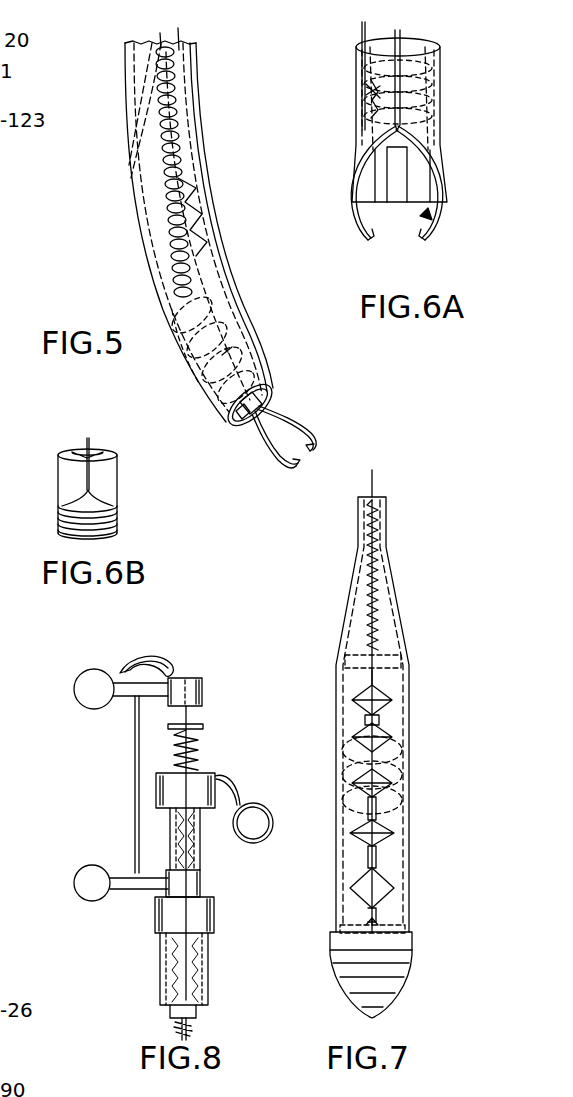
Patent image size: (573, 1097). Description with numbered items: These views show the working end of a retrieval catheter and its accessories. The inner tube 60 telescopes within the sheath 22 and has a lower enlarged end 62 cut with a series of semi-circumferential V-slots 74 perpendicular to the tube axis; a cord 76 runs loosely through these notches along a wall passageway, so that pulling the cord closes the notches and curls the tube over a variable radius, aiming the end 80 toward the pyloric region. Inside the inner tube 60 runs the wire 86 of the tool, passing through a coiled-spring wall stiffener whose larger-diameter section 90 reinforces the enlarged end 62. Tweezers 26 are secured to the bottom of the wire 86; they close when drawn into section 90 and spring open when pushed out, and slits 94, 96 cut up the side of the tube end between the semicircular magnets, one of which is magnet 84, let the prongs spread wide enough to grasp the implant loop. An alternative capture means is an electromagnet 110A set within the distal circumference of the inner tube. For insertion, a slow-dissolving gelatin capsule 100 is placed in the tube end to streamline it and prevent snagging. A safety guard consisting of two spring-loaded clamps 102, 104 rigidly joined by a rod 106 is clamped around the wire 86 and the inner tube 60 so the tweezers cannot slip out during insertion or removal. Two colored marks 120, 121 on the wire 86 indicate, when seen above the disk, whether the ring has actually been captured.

In FIG. 8, the sheath 22 is at (208, 985).
In FIG. 5, the tweezers 26 is at (318, 440).
In FIG. 6A, the tweezers 26 is at (439, 215).
In FIG. 7, the tweezers 26 is at (398, 742).
In FIG. 8, the inner tube 60 is at (200, 848).
In FIG. 5, the lower enlarged end of the inner tube 62 is at (228, 352).
In FIG. 5, the V-slots 74 is at (205, 286).
In FIG. 6A, the V-slots 74 is at (375, 97).
In FIG. 5, the cord 76 is at (216, 312).
In FIG. 6A, the cord 76 is at (361, 25).
In FIG. 7, the cord 76 is at (385, 836).
In FIG. 5, the end of the inner tube 80 is at (272, 391).
In FIG. 6A, the end of the inner tube 80 is at (428, 222).
In FIG. 6A, the semicircular magnet 84 is at (398, 203).
In FIG. 6A, the wire 86 is at (402, 70).
In FIG. 8, the wire 86 is at (200, 708).
In FIG. 5, the larger-diameter section of wall stiffener 90 is at (183, 370).
In FIG. 6A, the larger-diameter section of wall stiffener 90 is at (427, 118).
In FIG. 7, the larger-diameter section of wall stiffener 90 is at (390, 798).
In FIG. 5, the slit 94 is at (258, 380).
In FIG. 6A, the slit 94 is at (356, 196).
In FIG. 7, the slit 94 is at (375, 922).
In FIG. 5, the slit 96 is at (212, 412).
In FIG. 6A, the slit 96 is at (442, 165).
In FIG. 7, the gelatin capsule 100 is at (404, 985).
In FIG. 8, the spring-loaded clamp 102 is at (102, 670).
In FIG. 8, the spring-loaded clamp 104 is at (88, 872).
In FIG. 8, the rod 106 is at (134, 774).
In FIG. 6B, the electromagnet 110A is at (118, 526).
In FIG. 8, the colored mark 120 is at (205, 727).
In FIG. 8, the colored mark 121 is at (196, 756).